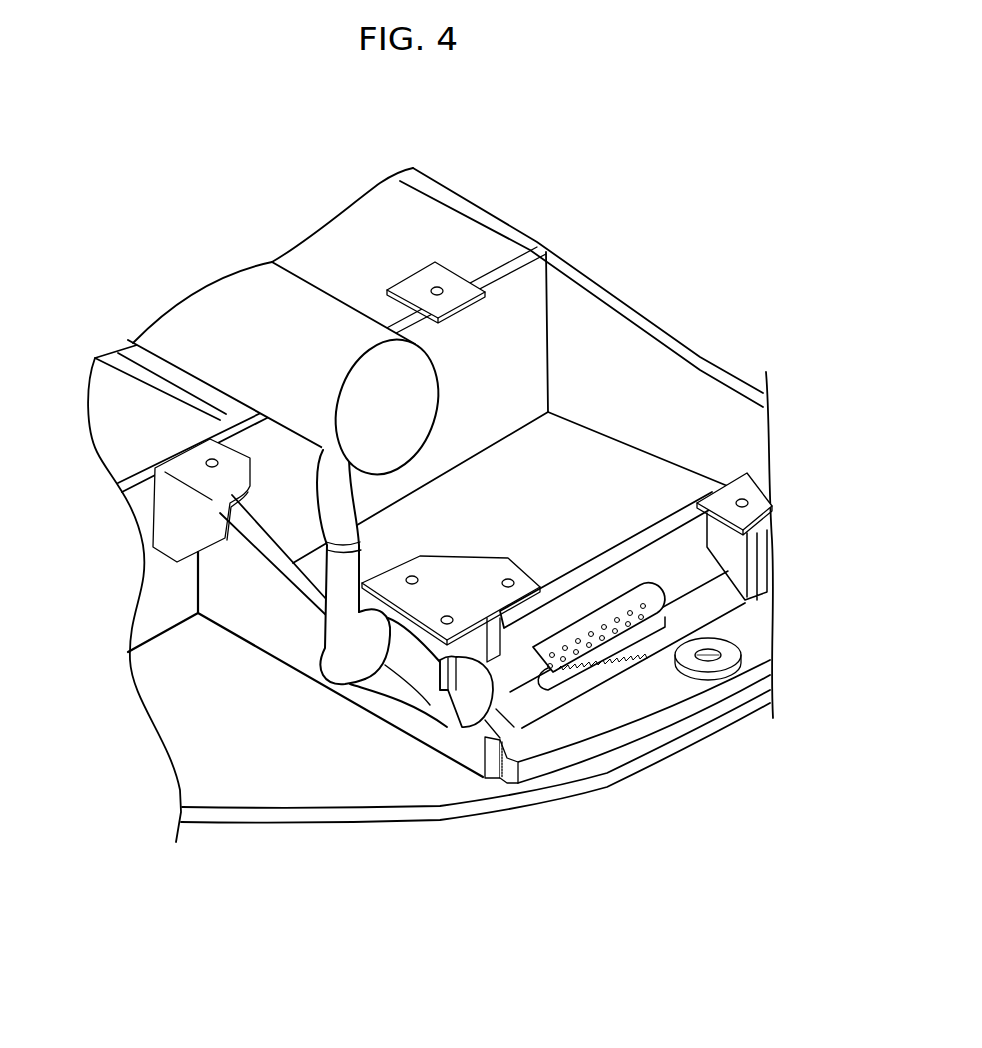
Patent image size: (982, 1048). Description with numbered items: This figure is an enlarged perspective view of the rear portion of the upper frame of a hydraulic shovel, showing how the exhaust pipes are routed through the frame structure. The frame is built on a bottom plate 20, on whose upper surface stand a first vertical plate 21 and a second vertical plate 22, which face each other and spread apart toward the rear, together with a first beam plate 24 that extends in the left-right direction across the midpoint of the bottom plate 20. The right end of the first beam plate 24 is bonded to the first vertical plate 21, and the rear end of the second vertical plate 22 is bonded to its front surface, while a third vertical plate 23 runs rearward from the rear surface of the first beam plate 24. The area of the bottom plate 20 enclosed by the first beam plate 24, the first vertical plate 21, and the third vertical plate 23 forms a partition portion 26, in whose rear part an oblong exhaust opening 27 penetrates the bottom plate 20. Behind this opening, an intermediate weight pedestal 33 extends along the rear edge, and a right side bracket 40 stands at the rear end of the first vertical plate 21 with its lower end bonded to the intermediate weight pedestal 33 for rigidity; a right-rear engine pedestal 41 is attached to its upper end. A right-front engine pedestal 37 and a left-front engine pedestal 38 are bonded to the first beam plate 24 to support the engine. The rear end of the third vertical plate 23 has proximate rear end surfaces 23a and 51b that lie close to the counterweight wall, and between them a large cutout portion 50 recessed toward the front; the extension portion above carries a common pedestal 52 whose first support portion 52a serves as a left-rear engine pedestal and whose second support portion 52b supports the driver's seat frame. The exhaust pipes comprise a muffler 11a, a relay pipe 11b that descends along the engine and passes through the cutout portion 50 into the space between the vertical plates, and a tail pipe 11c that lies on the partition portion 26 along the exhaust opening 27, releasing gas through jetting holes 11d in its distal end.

The muffler 11a is at (233, 290).
The relay pipe 11b is at (320, 490).
The tail pipe 11c is at (610, 610).
The jetting holes 11d is at (607, 657).
The bottom plate 20 is at (288, 814).
The first vertical plate 21 is at (482, 217).
The second vertical plate 22 is at (118, 352).
The third vertical plate 23 is at (237, 620).
The proximate rear end surface 23a is at (484, 779).
The first beam plate 24 is at (136, 476).
The partition portion 26 is at (530, 452).
The exhaust opening 27 is at (672, 523).
The intermediate weight pedestal 33 is at (757, 640).
The right-front engine pedestal 37 is at (418, 280).
The left-front engine pedestal 38 is at (173, 535).
The right side bracket 40 is at (765, 543).
The right-rear engine pedestal 41 is at (758, 490).
The cutout portion 50 is at (390, 723).
The rear end surface 51b is at (530, 645).
The common pedestal 52 is at (453, 577).
The first support portion 52a is at (407, 570).
The second support portion 52b is at (483, 597).